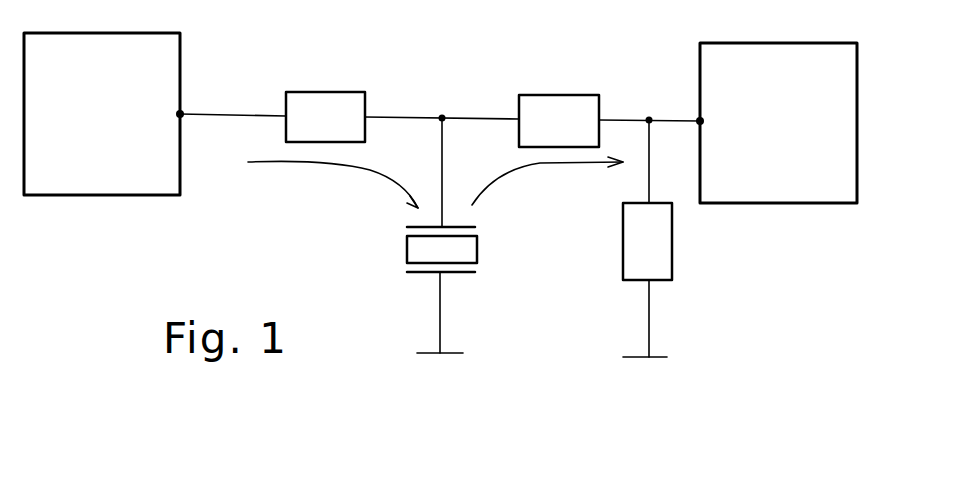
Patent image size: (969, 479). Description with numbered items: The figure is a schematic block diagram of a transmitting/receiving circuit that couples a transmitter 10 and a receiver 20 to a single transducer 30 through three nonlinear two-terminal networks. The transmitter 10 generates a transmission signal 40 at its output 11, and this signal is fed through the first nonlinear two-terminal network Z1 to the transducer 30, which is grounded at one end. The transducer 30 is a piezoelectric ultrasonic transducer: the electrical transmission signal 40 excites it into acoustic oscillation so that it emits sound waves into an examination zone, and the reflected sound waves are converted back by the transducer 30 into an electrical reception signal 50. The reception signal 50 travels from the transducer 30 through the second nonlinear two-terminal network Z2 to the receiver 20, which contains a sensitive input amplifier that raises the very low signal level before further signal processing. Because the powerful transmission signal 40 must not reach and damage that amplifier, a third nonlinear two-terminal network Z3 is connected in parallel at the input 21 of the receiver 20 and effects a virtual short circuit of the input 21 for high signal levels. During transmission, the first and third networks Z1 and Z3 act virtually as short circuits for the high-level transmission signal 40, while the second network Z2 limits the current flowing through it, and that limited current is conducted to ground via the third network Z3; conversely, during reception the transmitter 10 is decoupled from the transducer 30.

The transmitter 10 is at (99, 185).
The output 11 is at (183, 112).
The receiver 20 is at (778, 197).
The input 21 is at (698, 118).
The transducer 30 is at (467, 252).
The transmission signal 40 is at (310, 164).
The reception signal 50 is at (555, 163).
The first nonlinear two-terminal network Z1 is at (303, 100).
The second nonlinear two-terminal network Z2 is at (543, 108).
The third nonlinear two-terminal network Z3 is at (663, 260).